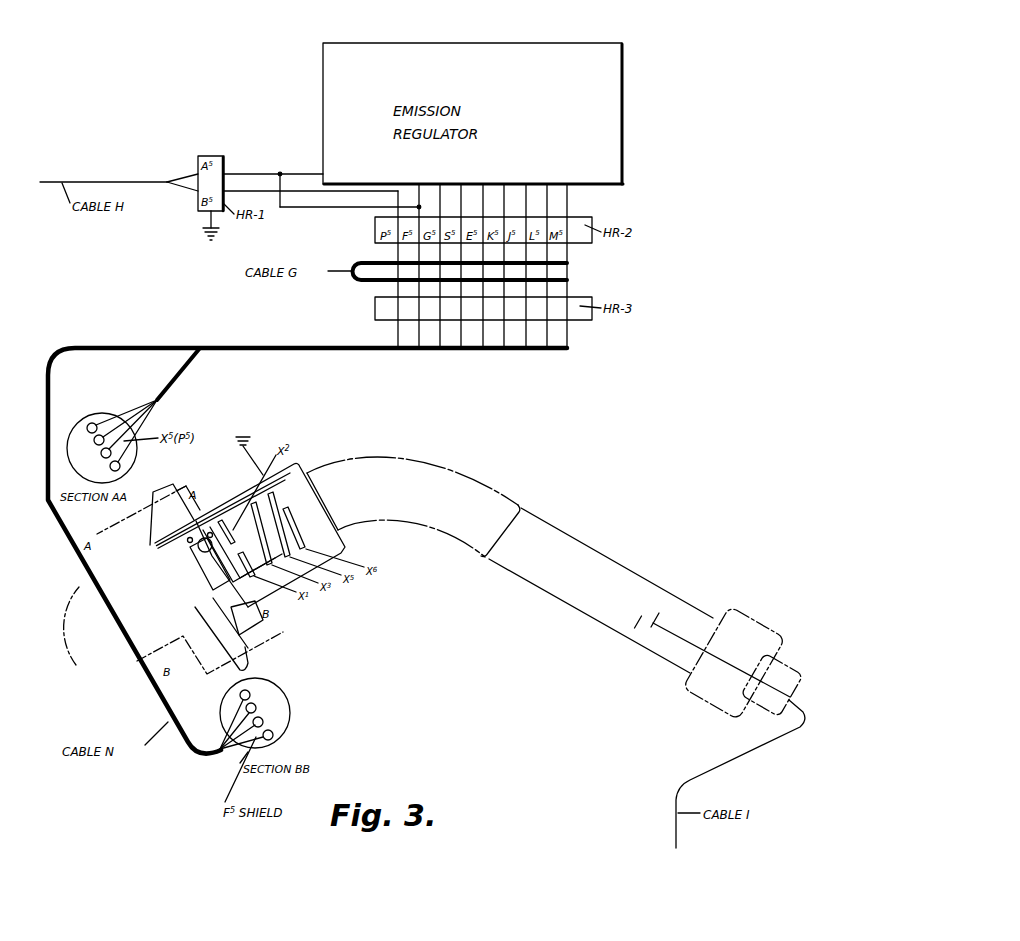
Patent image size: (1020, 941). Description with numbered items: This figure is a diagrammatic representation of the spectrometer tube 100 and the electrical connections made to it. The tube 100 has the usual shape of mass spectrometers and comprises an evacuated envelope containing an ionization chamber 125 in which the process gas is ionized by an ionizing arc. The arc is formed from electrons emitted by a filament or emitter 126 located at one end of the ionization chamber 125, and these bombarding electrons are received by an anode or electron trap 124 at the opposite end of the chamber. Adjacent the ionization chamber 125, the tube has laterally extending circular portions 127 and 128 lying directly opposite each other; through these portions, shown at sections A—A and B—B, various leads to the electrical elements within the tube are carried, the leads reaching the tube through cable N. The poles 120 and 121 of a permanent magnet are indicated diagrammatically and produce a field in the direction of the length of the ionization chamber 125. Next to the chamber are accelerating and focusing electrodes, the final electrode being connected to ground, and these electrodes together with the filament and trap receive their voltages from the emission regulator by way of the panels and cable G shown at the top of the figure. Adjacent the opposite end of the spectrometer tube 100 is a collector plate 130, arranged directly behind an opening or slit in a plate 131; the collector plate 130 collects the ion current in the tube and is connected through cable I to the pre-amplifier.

The spectrometer tube 100 is at (473, 485).
The permanent magnet pole 120 is at (267, 623).
The permanent magnet pole 121 is at (186, 490).
The anode or electron trap 124 is at (217, 592).
The ionization chamber 125 is at (207, 570).
The filament or emitter 126 is at (210, 537).
The laterally extending circular portion 127 is at (157, 492).
The laterally extending circular portion 128 is at (244, 647).
The collector plate 130 is at (660, 618).
The slit plate 131 is at (650, 607).